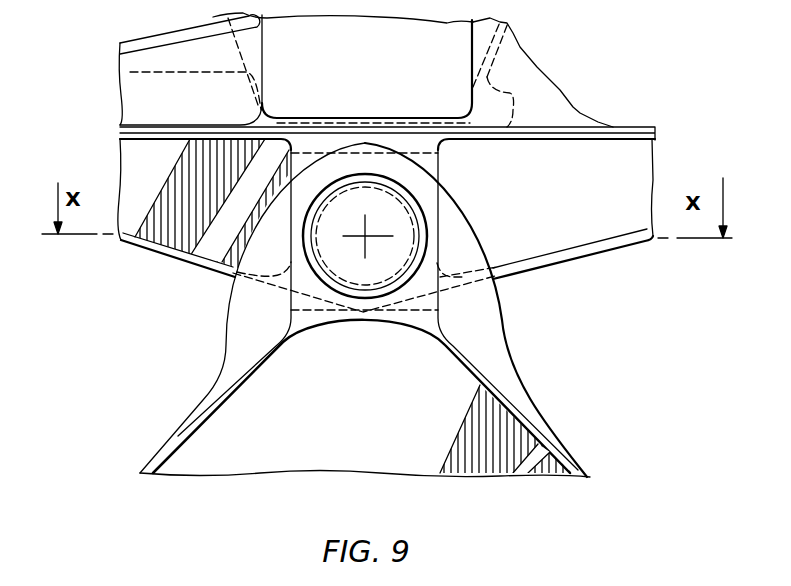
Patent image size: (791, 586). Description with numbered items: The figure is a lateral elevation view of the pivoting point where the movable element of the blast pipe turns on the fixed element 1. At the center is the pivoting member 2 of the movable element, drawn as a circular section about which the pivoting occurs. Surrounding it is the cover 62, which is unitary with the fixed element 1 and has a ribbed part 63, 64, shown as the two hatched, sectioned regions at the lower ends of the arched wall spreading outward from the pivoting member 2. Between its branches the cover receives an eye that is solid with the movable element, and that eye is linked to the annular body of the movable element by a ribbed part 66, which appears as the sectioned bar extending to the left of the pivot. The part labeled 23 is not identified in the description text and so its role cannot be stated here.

The fixed element 1 is at (481, 384).
The pivoting member 2 is at (367, 233).
The rail 23 is at (631, 127).
The cover 62 is at (467, 223).
The ribbed part 63 is at (180, 430).
The ribbed part 64 is at (530, 426).
The ribbed part 66 is at (193, 263).